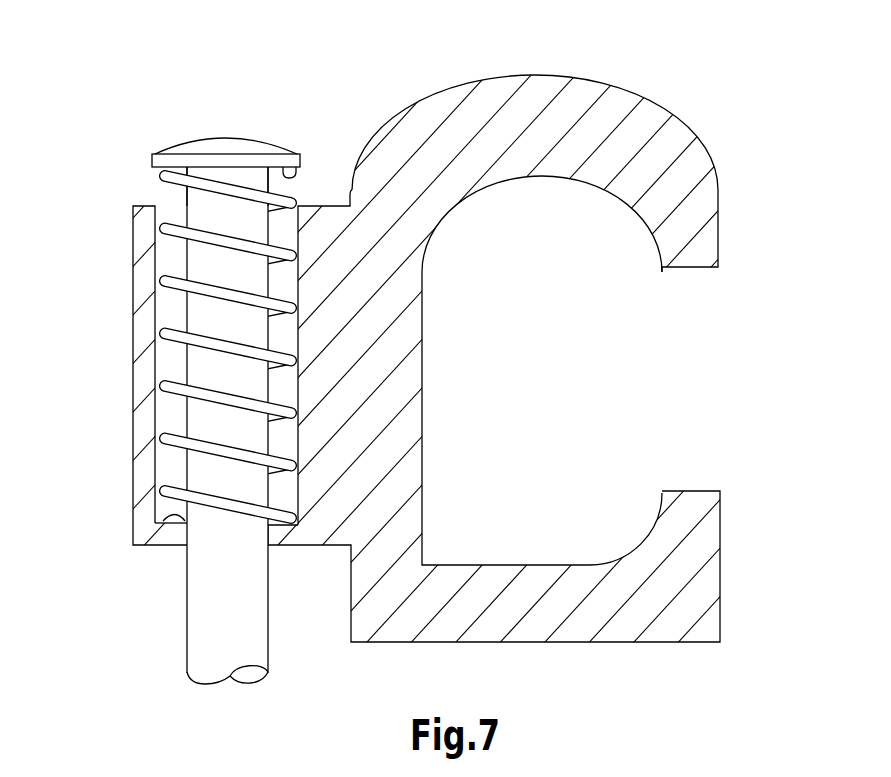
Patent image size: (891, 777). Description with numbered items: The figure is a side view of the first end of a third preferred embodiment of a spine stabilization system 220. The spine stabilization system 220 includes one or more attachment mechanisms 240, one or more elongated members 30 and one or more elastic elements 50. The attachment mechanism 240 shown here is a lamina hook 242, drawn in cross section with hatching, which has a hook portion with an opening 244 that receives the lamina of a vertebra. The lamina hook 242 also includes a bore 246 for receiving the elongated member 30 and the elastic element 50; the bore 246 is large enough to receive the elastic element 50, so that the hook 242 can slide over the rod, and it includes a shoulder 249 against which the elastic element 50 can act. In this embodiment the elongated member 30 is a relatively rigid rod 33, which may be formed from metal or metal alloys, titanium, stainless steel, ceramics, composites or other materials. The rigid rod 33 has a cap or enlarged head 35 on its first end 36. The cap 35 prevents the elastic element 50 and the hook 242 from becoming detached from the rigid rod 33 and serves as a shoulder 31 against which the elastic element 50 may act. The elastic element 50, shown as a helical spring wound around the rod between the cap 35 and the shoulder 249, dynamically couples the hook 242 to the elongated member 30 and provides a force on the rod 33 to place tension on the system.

The spine stabilization system 220 is at (366, 72).
The attachment mechanism 240 is at (703, 233).
The lamina hook 242 is at (612, 113).
The opening 244 is at (650, 383).
The bore 246 is at (168, 305).
The shoulder 249 is at (165, 520).
The elastic element 50 is at (171, 401).
The elongated member 30 is at (187, 578).
The rigid rod 33 is at (225, 603).
The first end 36 is at (190, 197).
The cap 35 is at (230, 143).
The shoulder 31 is at (286, 186).